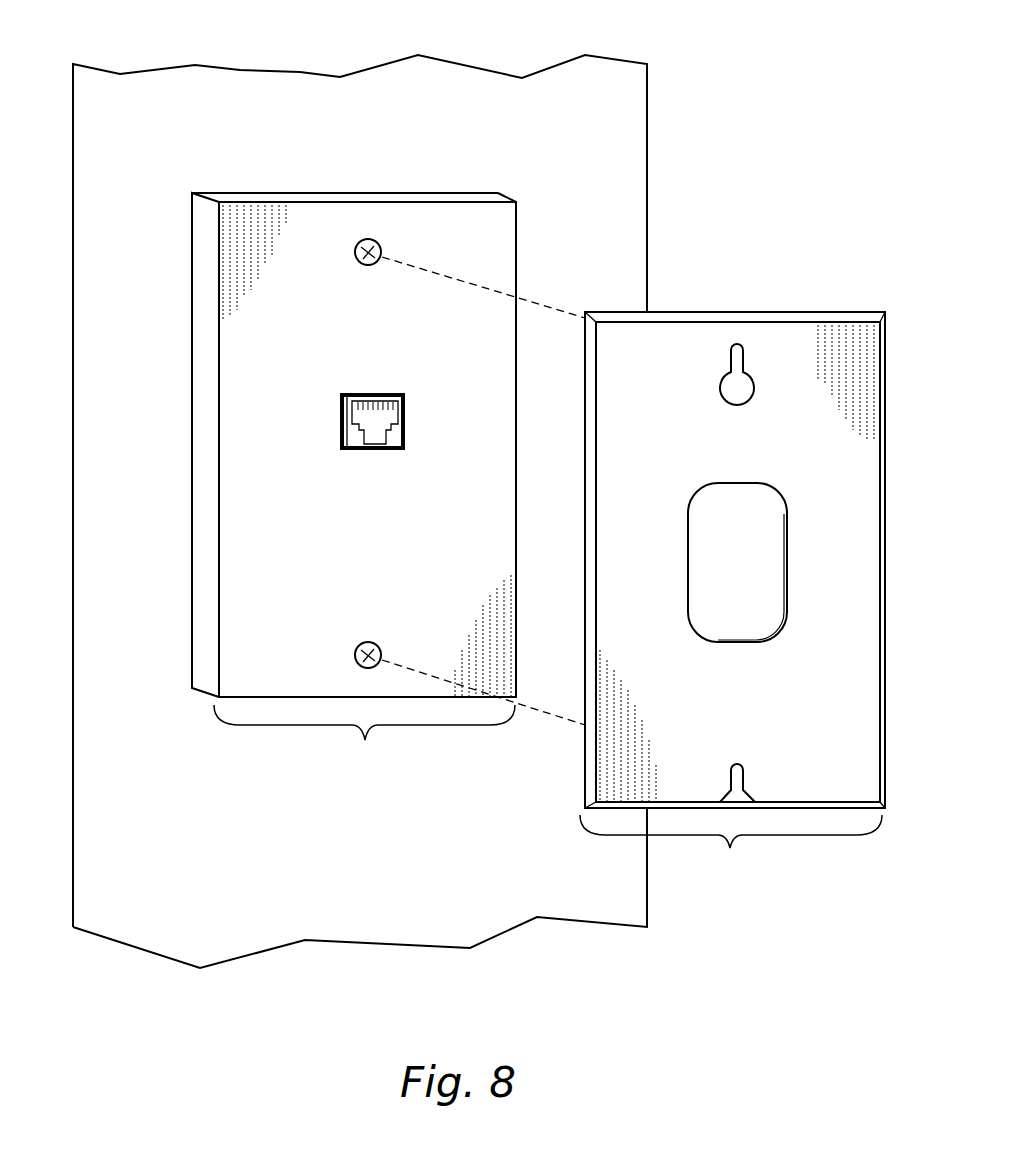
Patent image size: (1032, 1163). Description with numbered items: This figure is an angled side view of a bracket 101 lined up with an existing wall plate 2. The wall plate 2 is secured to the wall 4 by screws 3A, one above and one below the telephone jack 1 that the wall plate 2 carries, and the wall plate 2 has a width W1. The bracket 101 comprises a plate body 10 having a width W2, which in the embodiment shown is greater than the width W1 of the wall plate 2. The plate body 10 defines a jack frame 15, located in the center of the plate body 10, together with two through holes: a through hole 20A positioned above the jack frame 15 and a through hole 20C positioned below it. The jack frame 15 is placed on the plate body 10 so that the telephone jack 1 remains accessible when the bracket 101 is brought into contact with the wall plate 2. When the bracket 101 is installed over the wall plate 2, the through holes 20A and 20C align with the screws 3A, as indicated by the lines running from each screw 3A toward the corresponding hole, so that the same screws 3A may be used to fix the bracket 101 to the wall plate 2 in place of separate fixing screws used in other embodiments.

The telephone jack 1 is at (337, 433).
The wall plate 2 is at (332, 237).
The screws 3A is at (353, 655).
The wall 4 is at (608, 138).
The plate body 10 is at (688, 350).
The jack frame 15 is at (787, 527).
The through hole 20A is at (755, 385).
The through hole 20C is at (747, 777).
The bracket 101 is at (899, 292).
The width of the wall plate W1 is at (364, 741).
The width of the plate body W2 is at (731, 849).